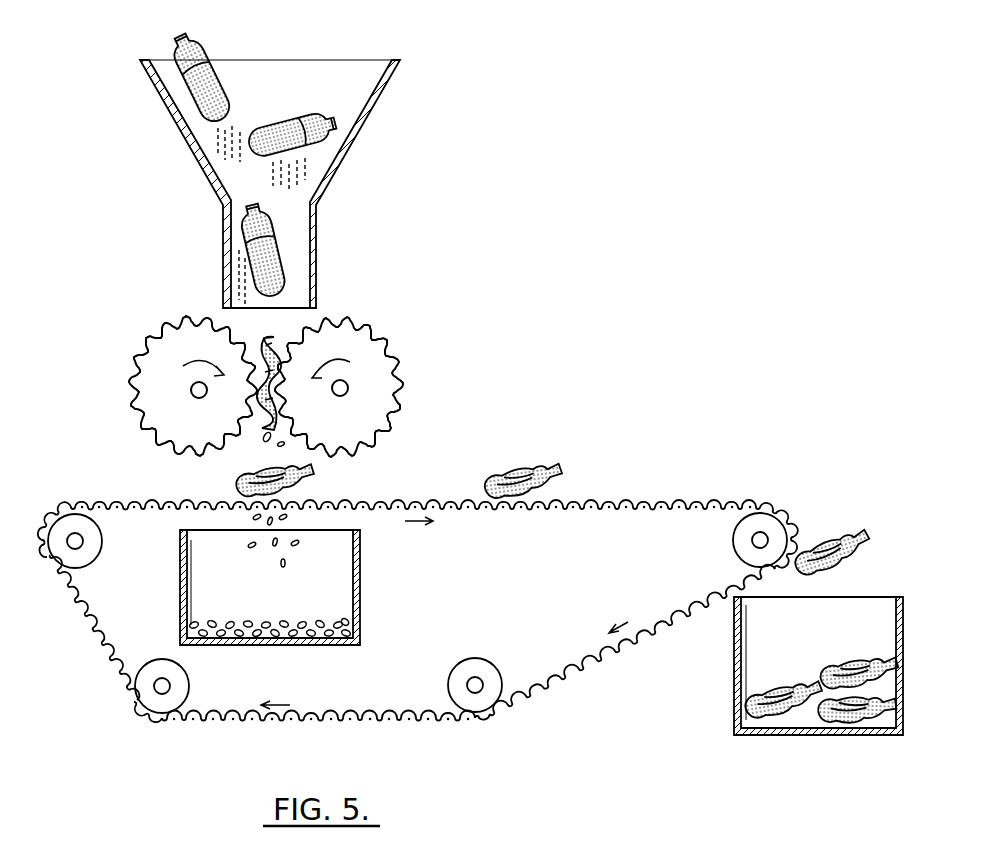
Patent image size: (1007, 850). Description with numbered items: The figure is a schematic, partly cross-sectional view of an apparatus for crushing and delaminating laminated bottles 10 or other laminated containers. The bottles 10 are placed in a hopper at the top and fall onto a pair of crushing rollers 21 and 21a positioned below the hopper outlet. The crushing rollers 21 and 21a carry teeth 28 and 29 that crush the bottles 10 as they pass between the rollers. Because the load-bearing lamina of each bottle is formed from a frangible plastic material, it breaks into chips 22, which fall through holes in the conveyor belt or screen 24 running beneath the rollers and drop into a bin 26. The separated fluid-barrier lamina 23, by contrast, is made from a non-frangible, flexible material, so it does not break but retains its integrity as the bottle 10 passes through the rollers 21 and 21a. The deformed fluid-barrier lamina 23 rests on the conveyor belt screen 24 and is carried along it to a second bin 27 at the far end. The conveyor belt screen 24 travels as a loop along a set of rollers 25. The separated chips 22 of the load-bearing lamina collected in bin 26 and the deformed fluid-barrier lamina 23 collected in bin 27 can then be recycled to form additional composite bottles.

The bottle 10 is at (212, 78).
The crushing roller 21 is at (162, 370).
The crushing roller 21a is at (373, 387).
The chips 22 is at (267, 437).
The fluid-barrier lamina 23 is at (306, 487).
The conveyor belt screen 24 is at (710, 503).
The rollers 25 is at (90, 545).
The bin 26 is at (360, 580).
The bin 27 is at (735, 660).
The teeth 28 is at (162, 330).
The teeth 29 is at (367, 323).